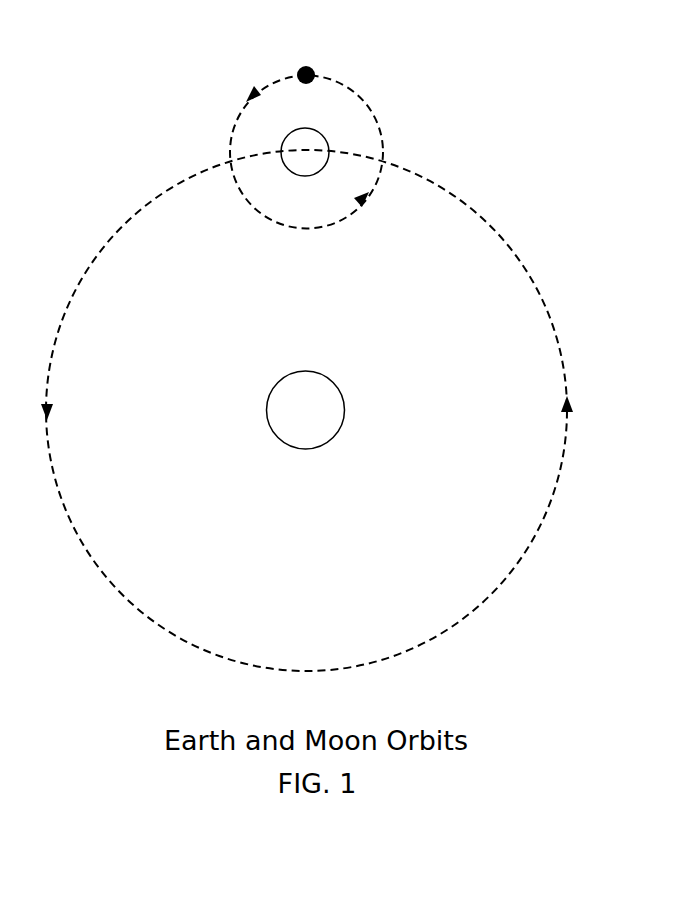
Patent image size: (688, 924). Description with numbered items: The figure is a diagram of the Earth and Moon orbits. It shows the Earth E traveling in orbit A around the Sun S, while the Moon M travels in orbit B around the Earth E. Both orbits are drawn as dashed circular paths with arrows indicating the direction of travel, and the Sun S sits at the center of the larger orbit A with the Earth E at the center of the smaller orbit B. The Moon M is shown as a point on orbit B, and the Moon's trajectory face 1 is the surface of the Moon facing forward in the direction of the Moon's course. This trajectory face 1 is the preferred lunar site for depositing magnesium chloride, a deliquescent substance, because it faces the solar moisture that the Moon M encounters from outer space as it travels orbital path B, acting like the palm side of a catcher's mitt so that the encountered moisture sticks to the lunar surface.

The Moon's trajectory face 1 is at (263, 40).
The Moon M is at (313, 68).
The orbit B is at (377, 113).
The orbit A is at (505, 242).
The Earth E is at (305, 152).
The Sun S is at (306, 410).